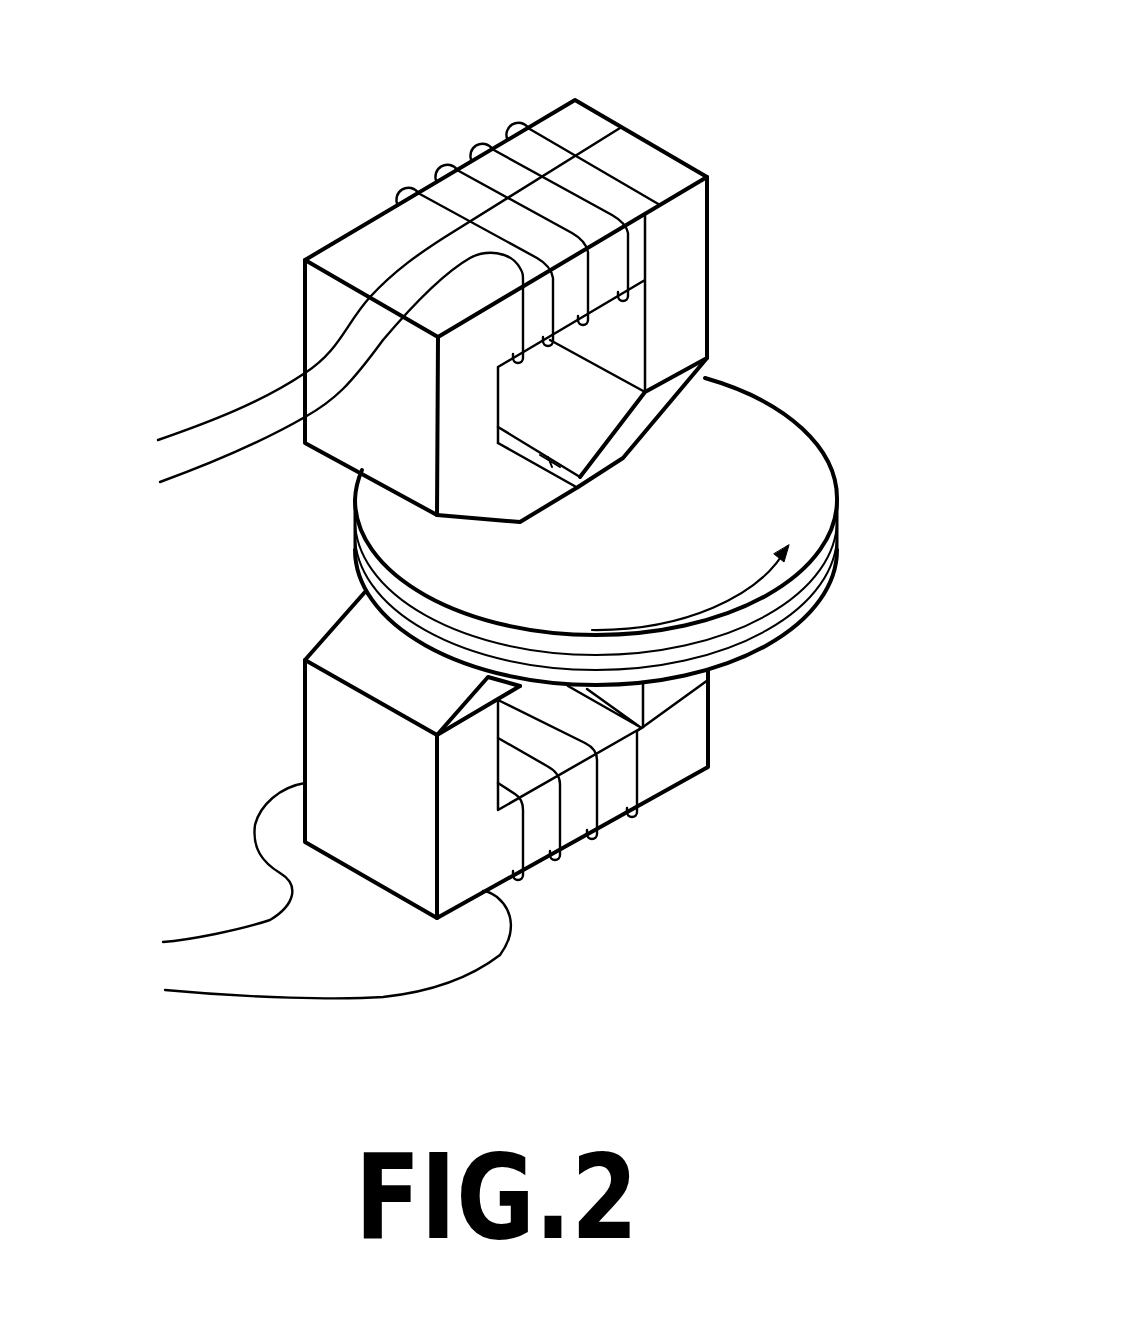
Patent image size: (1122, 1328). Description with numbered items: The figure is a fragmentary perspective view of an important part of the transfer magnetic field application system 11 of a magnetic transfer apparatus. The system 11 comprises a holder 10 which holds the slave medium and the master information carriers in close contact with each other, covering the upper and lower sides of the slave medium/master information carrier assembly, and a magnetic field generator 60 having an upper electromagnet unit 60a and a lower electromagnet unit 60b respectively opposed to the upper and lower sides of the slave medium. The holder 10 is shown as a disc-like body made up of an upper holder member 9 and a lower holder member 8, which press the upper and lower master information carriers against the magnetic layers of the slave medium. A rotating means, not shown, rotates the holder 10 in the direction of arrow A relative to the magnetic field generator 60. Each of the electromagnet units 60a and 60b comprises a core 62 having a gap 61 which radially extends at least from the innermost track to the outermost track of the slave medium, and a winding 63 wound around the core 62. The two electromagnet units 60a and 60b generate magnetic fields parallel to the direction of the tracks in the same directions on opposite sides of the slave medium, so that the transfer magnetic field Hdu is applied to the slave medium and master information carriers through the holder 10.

The transfer magnetic field application system 11 is at (132, 76).
The magnetic field generator 60 is at (833, 92).
The upper electromagnet unit 60a is at (623, 143).
The lower electromagnet unit 60b is at (687, 736).
The gap 61 is at (500, 458).
The core 62 is at (693, 290).
The winding 63 is at (483, 140).
The holder 10 is at (812, 422).
The upper holder member 9 is at (812, 520).
The lower holder member 8 is at (810, 615).
The direction of arrow A is at (733, 600).
The transfer magnetic field Hdu is at (556, 465).